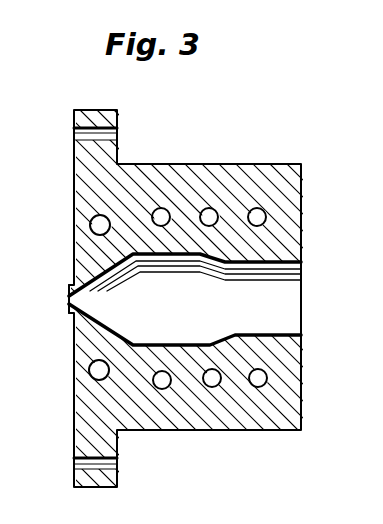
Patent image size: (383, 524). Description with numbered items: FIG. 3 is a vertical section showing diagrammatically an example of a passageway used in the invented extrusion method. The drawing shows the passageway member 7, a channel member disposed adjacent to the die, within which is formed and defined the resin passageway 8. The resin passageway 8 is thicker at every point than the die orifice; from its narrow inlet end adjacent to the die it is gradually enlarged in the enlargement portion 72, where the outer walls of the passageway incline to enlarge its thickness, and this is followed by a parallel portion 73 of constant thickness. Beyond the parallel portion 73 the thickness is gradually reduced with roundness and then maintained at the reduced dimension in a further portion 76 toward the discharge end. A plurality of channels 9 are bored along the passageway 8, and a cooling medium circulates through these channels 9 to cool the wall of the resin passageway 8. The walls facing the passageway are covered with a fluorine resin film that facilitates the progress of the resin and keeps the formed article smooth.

The passageway member 7 is at (142, 412).
The resin passageway 8 is at (282, 303).
The channels for cooling medium 9 is at (258, 388).
The enlargement portion 72 is at (98, 272).
The parallel portion 73 is at (182, 250).
The outer layer 76 is at (225, 260).